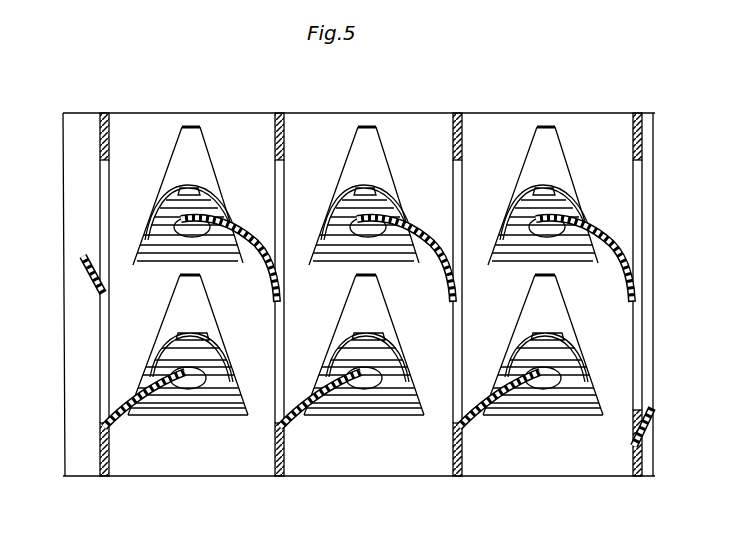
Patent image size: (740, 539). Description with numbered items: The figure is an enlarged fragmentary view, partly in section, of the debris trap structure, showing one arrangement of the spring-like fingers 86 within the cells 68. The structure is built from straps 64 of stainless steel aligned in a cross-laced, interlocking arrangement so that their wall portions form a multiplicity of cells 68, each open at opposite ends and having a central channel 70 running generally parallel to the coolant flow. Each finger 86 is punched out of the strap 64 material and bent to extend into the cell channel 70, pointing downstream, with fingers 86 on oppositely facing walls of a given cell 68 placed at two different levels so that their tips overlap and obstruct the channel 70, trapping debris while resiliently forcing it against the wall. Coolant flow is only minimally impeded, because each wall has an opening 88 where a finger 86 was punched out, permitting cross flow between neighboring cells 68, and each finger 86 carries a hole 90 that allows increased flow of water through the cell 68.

The strap 64 is at (533, 114).
The cell 68 is at (254, 133).
The central channel 70 is at (247, 437).
The spring-like finger 86 is at (194, 190).
The opening 88 is at (151, 153).
The hole 90 is at (160, 242).